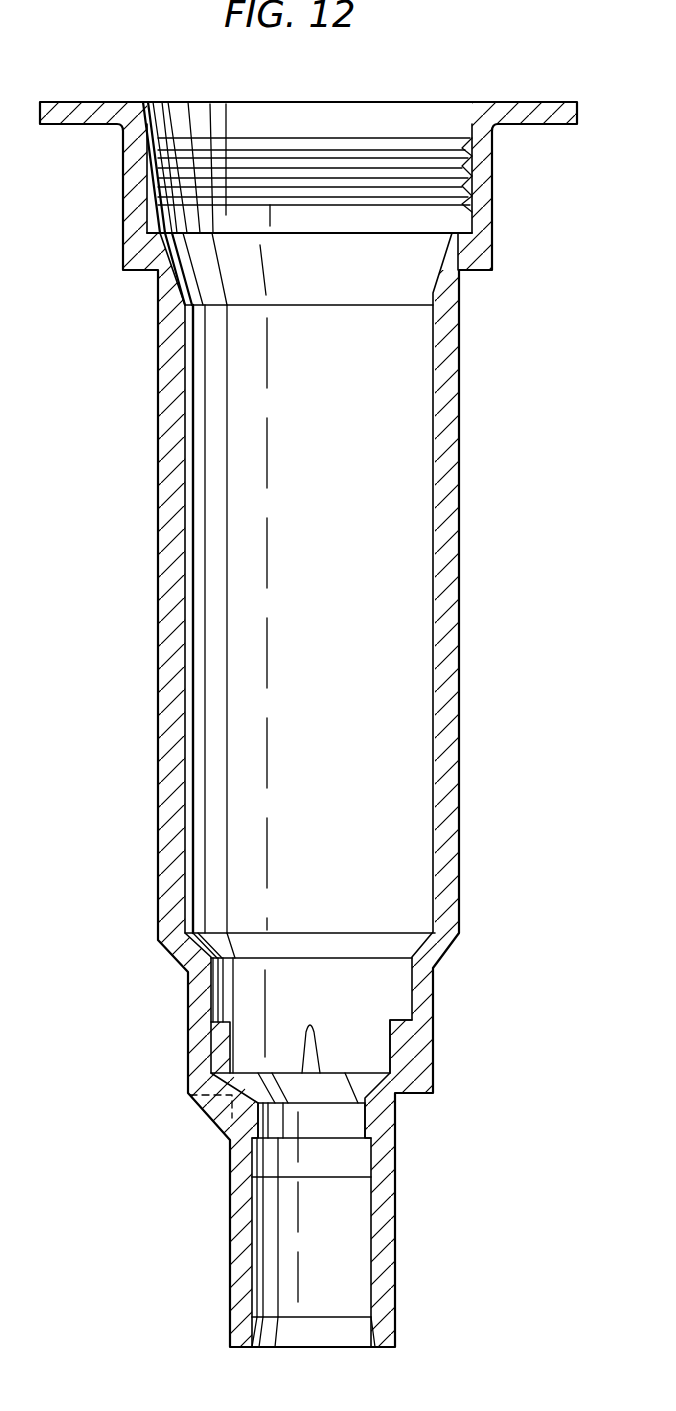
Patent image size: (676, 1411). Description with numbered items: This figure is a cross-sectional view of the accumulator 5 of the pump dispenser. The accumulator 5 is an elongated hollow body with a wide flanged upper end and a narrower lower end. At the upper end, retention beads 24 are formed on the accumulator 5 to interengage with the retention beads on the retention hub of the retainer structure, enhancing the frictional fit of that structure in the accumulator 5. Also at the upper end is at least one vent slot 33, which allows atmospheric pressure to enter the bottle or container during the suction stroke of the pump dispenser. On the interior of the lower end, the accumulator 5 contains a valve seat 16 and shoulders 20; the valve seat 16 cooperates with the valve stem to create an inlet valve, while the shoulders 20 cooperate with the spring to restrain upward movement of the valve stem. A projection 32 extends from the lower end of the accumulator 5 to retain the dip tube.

The accumulator 5 is at (528, 514).
The valve seat 16 is at (351, 1084).
The shoulders 20 is at (222, 1045).
The retention beads 24 is at (470, 205).
The projection 32 is at (226, 1254).
The vent slot 33 is at (450, 281).